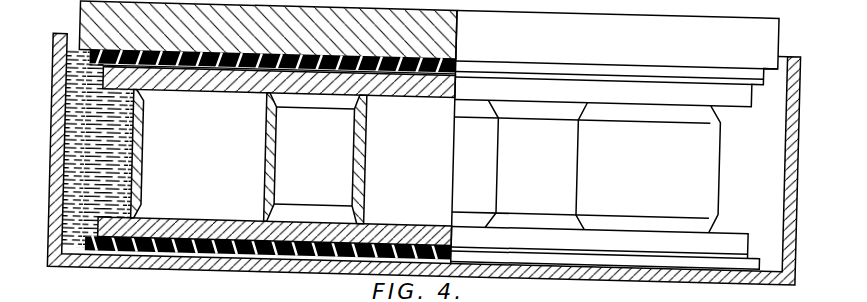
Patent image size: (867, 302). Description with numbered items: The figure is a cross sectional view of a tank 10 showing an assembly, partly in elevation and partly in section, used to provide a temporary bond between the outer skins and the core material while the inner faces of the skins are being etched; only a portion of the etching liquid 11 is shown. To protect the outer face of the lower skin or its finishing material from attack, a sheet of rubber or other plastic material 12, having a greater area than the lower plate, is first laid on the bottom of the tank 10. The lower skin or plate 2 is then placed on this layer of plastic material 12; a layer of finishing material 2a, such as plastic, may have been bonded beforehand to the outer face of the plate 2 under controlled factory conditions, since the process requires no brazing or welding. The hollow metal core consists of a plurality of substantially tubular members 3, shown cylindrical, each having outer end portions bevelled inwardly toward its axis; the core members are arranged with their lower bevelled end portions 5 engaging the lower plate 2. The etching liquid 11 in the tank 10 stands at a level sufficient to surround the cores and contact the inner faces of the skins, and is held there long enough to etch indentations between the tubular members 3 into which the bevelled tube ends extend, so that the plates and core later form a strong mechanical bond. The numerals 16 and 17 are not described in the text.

The lower skin or plate 2 is at (188, 220).
The finishing material 2a is at (614, 134).
The tubular member 3 is at (141, 144).
The lower bevelled end portion 5 is at (137, 203).
The tank 10 is at (132, 263).
The etching liquid 11 is at (80, 232).
The sheet of rubber or other plastic material 12 is at (320, 255).
The upper sealing ring 16 is at (495, 68).
The rod end 17 is at (587, 33).